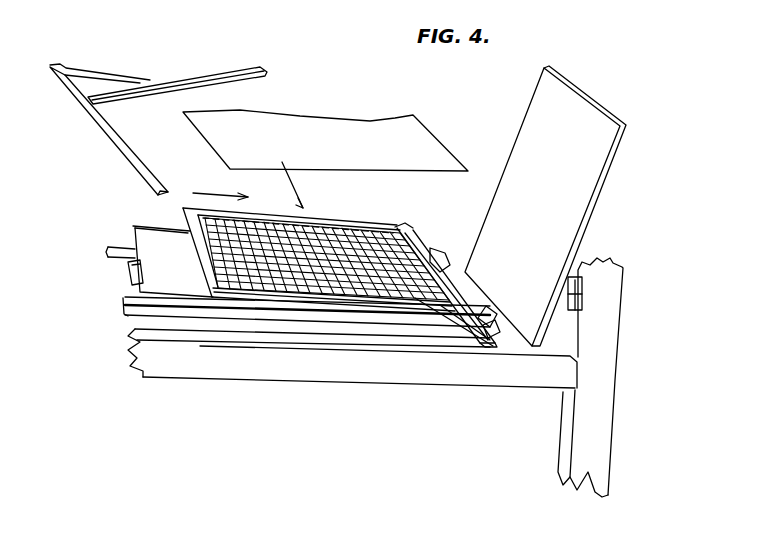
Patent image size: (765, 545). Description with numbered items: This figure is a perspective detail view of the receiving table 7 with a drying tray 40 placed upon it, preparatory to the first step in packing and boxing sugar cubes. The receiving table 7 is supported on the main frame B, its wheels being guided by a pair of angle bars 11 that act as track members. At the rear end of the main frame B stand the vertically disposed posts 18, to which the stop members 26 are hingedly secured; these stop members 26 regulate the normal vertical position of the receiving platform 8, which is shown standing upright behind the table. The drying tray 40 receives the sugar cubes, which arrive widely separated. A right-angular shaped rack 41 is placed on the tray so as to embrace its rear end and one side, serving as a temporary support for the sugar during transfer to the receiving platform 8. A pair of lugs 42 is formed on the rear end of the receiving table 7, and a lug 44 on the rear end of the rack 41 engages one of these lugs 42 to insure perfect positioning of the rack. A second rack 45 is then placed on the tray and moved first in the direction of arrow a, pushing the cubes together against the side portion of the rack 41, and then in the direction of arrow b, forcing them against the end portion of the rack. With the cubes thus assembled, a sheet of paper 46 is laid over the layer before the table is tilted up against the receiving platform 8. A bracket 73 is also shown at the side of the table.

The second rack 45 is at (210, 80).
The sheet of paper 46 is at (437, 148).
The drying tray 40 is at (182, 213).
The right-angular shaped rack 41 is at (413, 236).
The lugs 42 is at (430, 252).
The lug 44 is at (485, 310).
The bracket 73 is at (127, 274).
The receiving table 7 is at (237, 308).
The angle bars 11 is at (305, 325).
The main frame B is at (352, 358).
The receiving platform 8 is at (597, 197).
The posts 18 is at (590, 377).
The stop members 26 is at (572, 298).
The arrow a is at (284, 159).
The arrow b is at (190, 194).